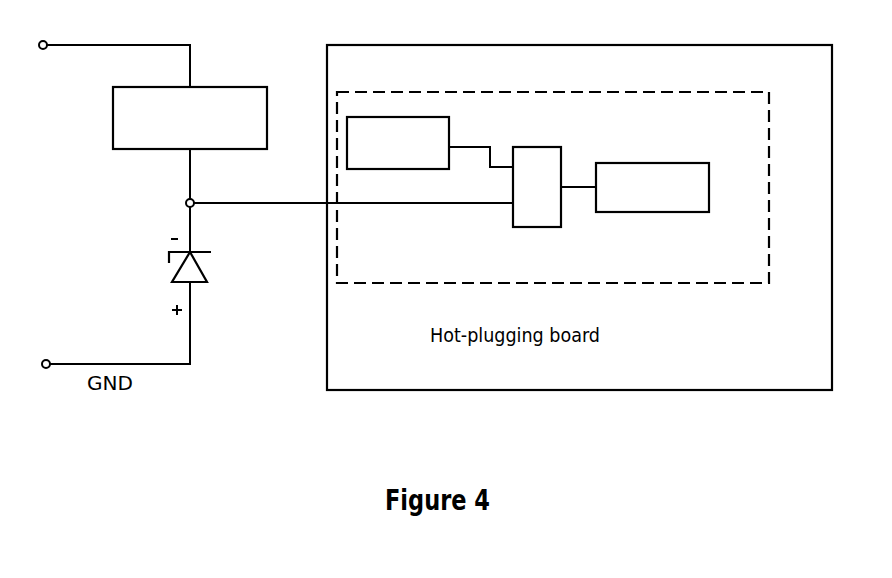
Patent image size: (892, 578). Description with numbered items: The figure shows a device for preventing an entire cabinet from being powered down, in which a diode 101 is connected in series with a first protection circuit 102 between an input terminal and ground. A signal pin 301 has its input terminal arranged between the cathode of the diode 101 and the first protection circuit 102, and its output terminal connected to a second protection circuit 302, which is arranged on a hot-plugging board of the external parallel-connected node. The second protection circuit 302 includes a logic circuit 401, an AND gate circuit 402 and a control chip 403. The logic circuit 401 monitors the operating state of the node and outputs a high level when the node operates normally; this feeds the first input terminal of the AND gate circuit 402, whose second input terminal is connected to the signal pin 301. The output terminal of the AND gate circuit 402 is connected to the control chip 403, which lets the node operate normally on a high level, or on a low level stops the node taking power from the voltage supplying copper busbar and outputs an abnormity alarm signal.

The diode 101 is at (205, 281).
The first protection circuit 102 is at (267, 111).
The signal pin 301 is at (192, 200).
The second protection circuit 302 is at (769, 126).
The logic circuit 401 is at (449, 139).
The AND gate circuit 402 is at (561, 154).
The control chip 403 is at (709, 179).